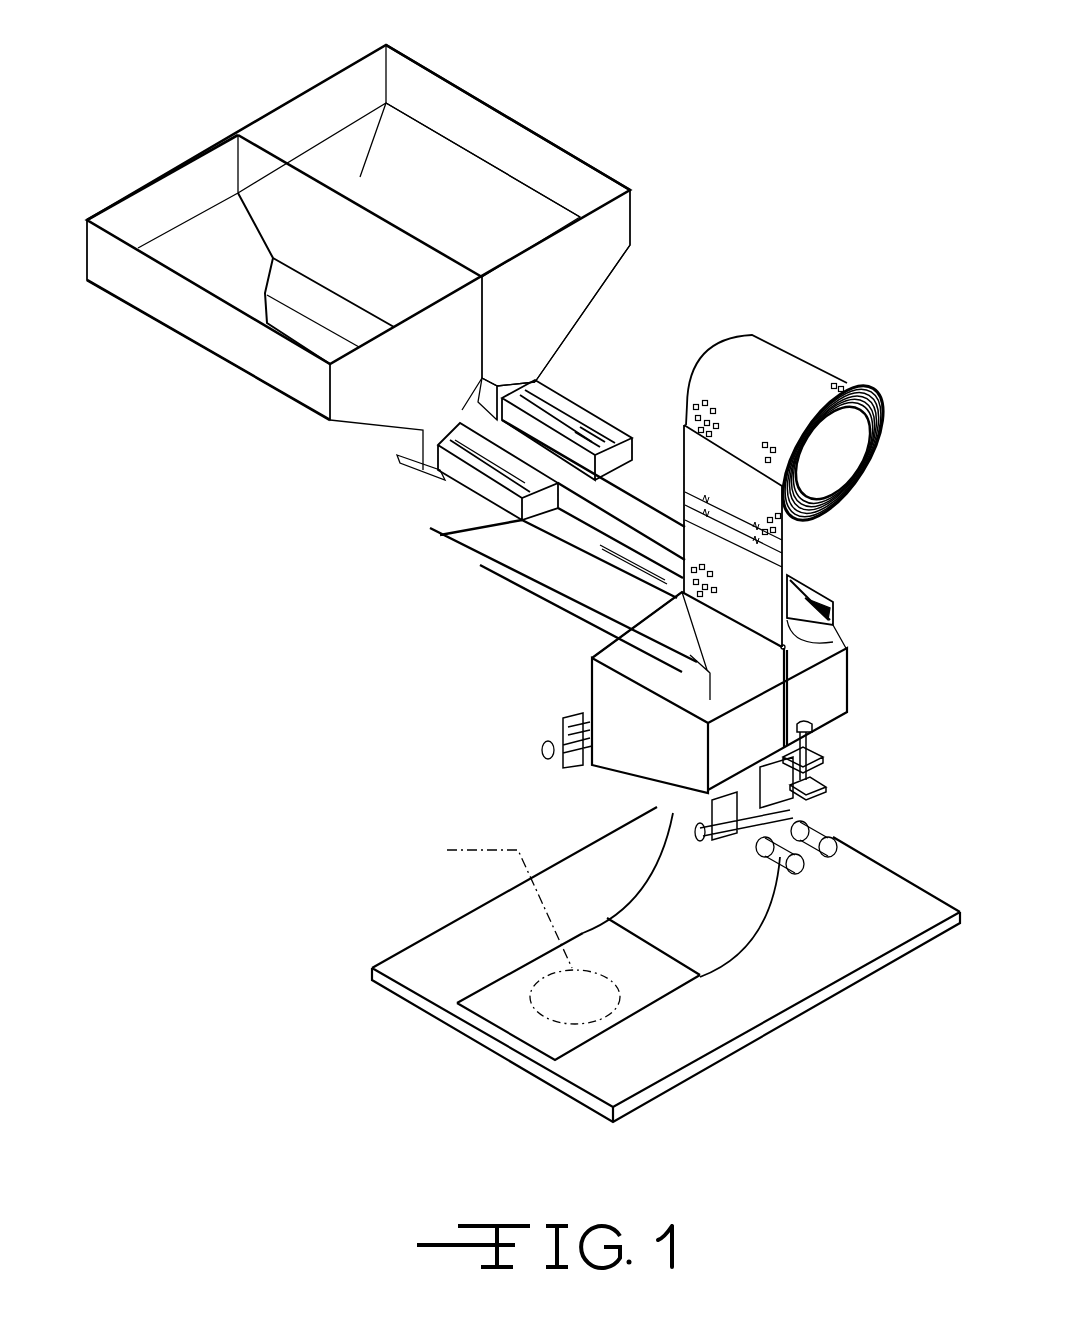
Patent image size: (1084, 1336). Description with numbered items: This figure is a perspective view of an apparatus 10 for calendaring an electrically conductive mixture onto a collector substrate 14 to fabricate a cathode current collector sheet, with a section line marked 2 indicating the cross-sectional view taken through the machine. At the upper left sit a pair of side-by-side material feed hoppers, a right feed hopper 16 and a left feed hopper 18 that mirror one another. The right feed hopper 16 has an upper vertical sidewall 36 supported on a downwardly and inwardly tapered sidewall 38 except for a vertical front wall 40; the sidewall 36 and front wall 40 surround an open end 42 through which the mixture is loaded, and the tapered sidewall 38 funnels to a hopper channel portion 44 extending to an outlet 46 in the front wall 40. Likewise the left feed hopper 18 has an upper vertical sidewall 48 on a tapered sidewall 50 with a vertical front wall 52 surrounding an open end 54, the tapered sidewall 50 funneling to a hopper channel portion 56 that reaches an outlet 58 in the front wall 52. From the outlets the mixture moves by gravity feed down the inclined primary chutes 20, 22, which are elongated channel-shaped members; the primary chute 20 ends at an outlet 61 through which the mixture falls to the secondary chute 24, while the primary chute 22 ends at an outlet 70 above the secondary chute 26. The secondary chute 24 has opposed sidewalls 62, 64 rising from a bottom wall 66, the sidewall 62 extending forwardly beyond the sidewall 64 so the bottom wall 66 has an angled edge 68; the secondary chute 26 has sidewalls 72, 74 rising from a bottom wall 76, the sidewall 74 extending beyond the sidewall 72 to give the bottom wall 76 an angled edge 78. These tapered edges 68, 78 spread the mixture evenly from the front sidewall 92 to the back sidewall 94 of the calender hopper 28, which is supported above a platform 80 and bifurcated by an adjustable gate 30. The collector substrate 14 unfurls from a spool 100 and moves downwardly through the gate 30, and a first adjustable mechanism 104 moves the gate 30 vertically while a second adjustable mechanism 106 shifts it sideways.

The apparatus 10 is at (644, 128).
The collector substrate 14 is at (785, 571).
The right feed hopper 16 is at (433, 72).
The left feed hopper 18 is at (87, 220).
The primary chute 20 is at (555, 390).
The primary chute 22 is at (385, 490).
The secondary chute 24 is at (633, 527).
The secondary chute 26 is at (520, 552).
The calender hopper 28 is at (852, 695).
The adjustable gate 30 is at (790, 657).
The upper vertical sidewall 36 is at (478, 127).
The tapered sidewall 38 is at (323, 158).
The vertical front wall 40 is at (600, 243).
The open end 42 is at (491, 203).
The hopper channel portion 44 is at (477, 400).
The outlet 46 is at (520, 393).
The upper vertical sidewall 48 is at (115, 273).
The tapered sidewall 50 is at (220, 267).
The vertical front wall 52 is at (338, 393).
The open end 54 is at (213, 248).
The hopper channel portion 56 is at (397, 438).
The outlet 58 is at (438, 443).
The outlet 61 is at (587, 443).
The sidewall 62 is at (832, 603).
The sidewall 64 is at (782, 557).
The bottom wall 66 is at (637, 525).
The angled edge 68 is at (823, 638).
The outlet 70 is at (520, 478).
The sidewall 72 is at (572, 543).
The sidewall 74 is at (560, 602).
The bottom wall 76 is at (617, 600).
The angled edge 78 is at (703, 640).
The platform 80 is at (772, 985).
The front sidewall 92 is at (822, 768).
The back sidewall 94 is at (617, 655).
The spool 100 is at (800, 352).
The first adjustable mechanism 104 is at (840, 745).
The second adjustable mechanism 106 is at (573, 768).
The section line 2- 2 is at (724, 280).